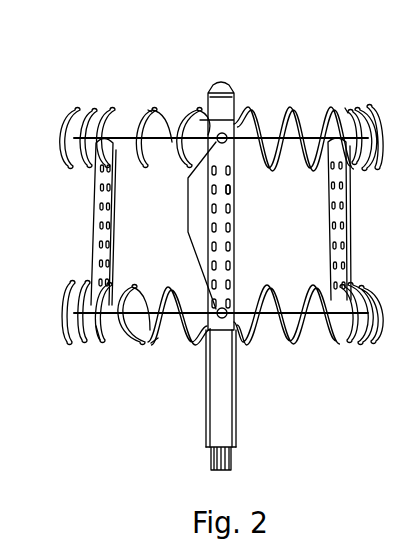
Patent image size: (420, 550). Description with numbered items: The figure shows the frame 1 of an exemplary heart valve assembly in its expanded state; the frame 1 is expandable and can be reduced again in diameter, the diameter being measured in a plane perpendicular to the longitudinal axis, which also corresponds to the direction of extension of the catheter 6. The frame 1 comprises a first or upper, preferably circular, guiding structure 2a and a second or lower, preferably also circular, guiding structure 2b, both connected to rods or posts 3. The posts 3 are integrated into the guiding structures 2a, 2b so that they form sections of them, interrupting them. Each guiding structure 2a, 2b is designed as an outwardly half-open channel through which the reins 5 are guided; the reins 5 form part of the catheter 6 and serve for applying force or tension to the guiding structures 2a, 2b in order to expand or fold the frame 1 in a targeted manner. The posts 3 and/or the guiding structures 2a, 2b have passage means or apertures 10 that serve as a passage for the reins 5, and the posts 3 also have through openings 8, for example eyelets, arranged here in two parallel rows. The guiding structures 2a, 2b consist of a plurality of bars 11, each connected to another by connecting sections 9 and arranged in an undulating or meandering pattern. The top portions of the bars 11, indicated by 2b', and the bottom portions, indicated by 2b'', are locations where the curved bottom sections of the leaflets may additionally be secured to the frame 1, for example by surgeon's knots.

The frame 1 is at (110, 427).
The first or upper guiding structure 2a is at (65, 131).
The second or lower guiding structure 2b is at (199, 293).
The top portions of bars 2b' is at (223, 293).
The bottom portions of bars 2b'' is at (65, 361).
The posts 3 is at (102, 213).
The reins 5 is at (178, 108).
The catheter 6 is at (241, 419).
The through openings 8 is at (233, 186).
The connecting sections 9 is at (140, 108).
The passage means or apertures 10 is at (188, 210).
The bars 11 is at (158, 338).